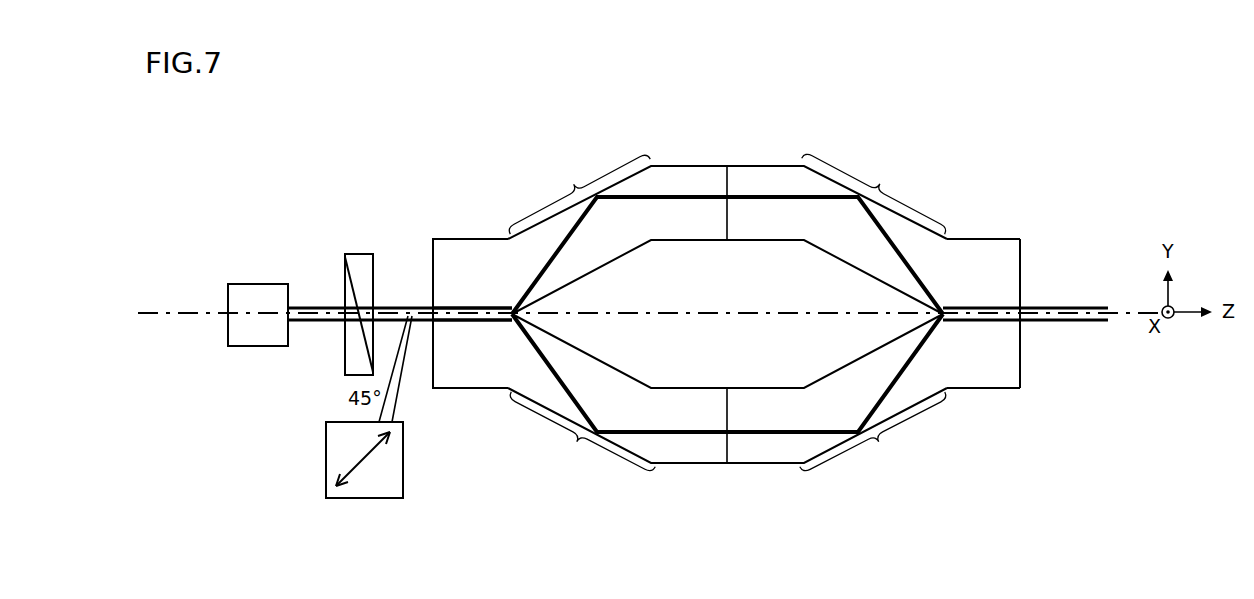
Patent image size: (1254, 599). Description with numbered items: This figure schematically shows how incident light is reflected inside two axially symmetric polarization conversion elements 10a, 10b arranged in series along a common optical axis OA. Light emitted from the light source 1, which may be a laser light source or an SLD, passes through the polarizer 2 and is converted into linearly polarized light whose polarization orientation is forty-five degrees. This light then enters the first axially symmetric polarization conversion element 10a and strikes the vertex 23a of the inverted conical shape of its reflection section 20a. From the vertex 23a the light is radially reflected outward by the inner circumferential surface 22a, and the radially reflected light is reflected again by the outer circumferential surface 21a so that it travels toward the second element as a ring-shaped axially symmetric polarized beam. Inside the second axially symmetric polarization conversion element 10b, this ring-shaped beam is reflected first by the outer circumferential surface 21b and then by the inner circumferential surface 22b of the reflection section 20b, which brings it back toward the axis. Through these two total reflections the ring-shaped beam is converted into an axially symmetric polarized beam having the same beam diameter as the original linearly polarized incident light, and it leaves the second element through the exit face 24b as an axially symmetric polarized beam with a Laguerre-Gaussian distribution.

The optical axis OA is at (188, 313).
The light source 1 is at (262, 283).
The polarizer 2 is at (363, 254).
The axially symmetric polarization conversion element 10a is at (488, 215).
The axially symmetric polarization conversion element 10b is at (968, 215).
The reflection section 20a is at (619, 318).
The reflection section 20b is at (835, 317).
The outer circumferential surface 21a is at (632, 183).
The outer circumferential surface 21b is at (823, 182).
The inner circumferential surface 22a is at (637, 241).
The inner circumferential surface 22b is at (818, 241).
The vertex 23a is at (512, 330).
The exit face 24b is at (1022, 345).